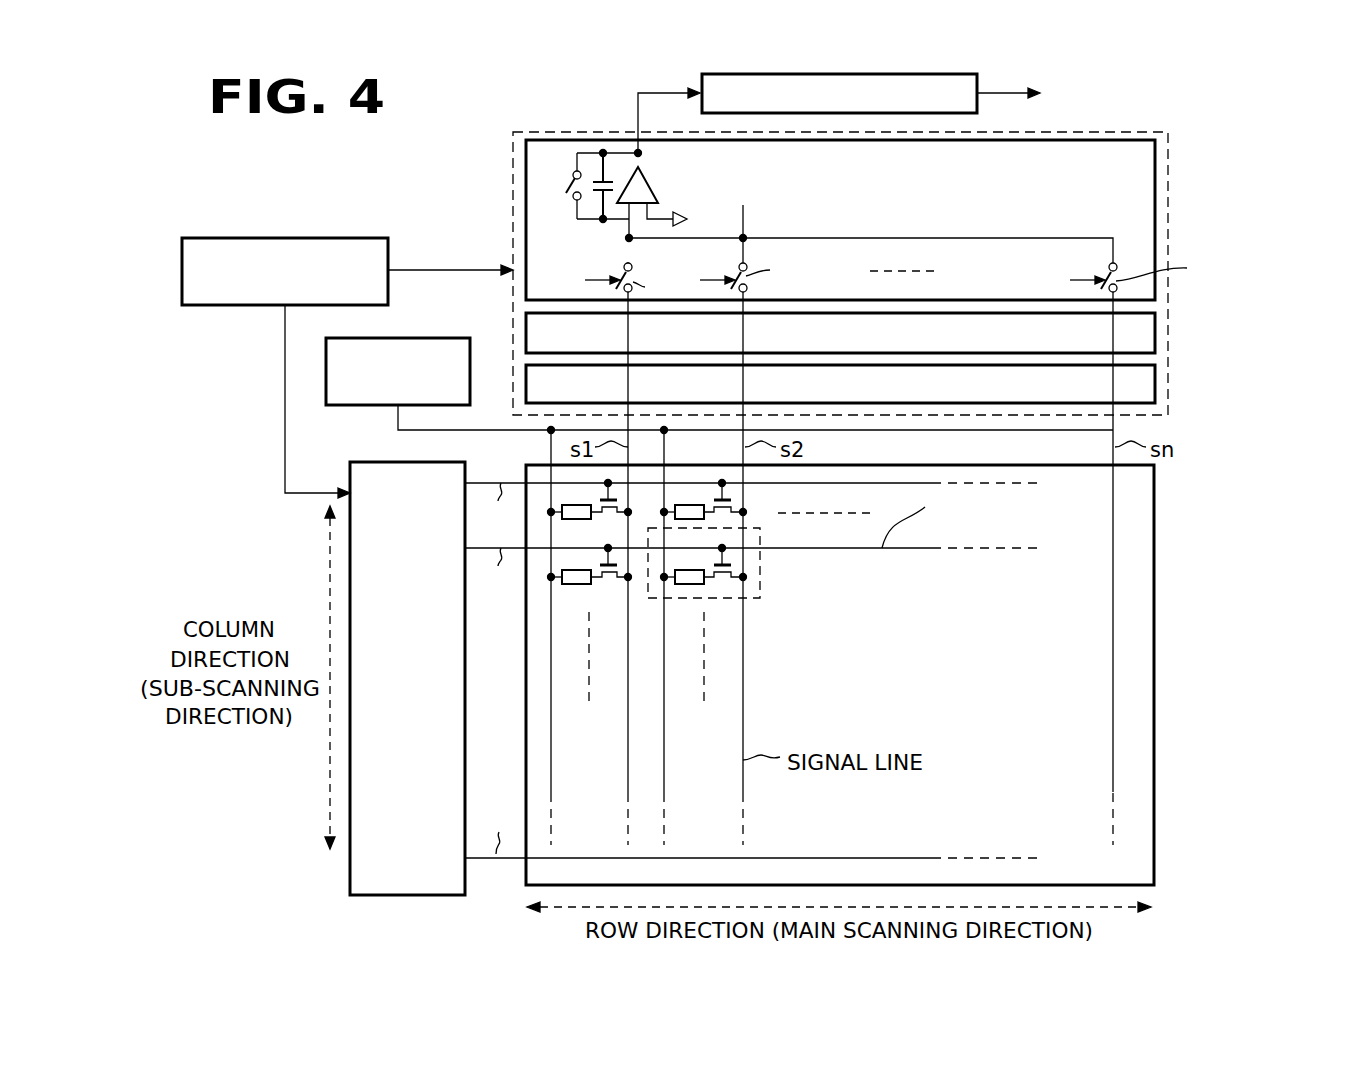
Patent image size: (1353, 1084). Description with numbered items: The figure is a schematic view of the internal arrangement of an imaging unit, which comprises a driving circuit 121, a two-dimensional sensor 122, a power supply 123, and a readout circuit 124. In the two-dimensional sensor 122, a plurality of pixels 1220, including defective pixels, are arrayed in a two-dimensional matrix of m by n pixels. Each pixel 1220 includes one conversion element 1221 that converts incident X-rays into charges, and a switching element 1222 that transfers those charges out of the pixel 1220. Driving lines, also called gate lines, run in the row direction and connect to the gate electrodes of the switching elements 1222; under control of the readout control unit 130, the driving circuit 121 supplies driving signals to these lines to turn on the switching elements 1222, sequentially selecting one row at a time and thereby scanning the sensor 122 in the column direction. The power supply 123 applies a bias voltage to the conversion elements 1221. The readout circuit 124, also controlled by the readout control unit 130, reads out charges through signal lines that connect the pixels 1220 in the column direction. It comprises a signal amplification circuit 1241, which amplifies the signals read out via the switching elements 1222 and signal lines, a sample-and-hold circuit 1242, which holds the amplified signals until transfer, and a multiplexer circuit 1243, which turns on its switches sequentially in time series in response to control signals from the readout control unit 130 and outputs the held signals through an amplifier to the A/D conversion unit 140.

The A/D conversion unit 140 is at (977, 77).
The readout circuit 124 is at (1168, 155).
The multiplexer circuit 1243 is at (1155, 226).
The sample-and-hold circuit 1242 is at (1155, 334).
The signal amplification circuit 1241 is at (1155, 385).
The readout control unit 130 is at (272, 238).
The power supply 123 is at (435, 337).
The driving circuit 121 is at (407, 897).
The 2D sensor 122 is at (849, 675).
The pixel 1220 is at (754, 617).
The conversion element 1221 is at (705, 583).
The switching element 1222 is at (725, 575).